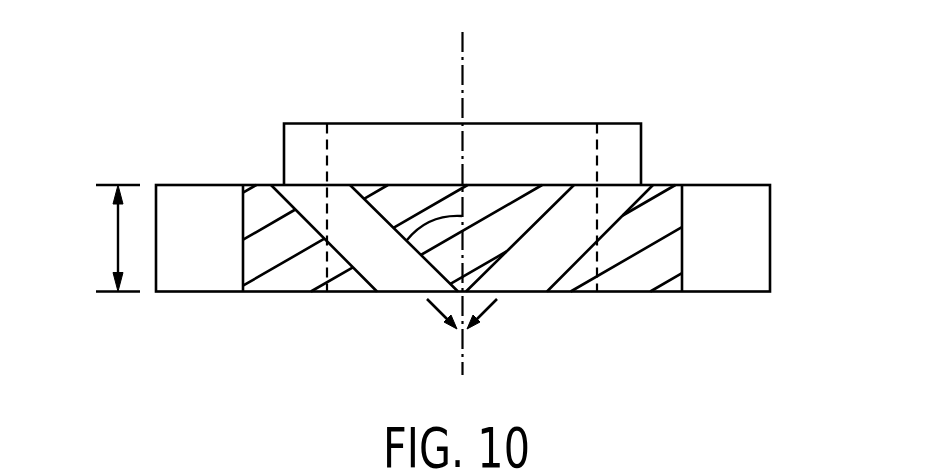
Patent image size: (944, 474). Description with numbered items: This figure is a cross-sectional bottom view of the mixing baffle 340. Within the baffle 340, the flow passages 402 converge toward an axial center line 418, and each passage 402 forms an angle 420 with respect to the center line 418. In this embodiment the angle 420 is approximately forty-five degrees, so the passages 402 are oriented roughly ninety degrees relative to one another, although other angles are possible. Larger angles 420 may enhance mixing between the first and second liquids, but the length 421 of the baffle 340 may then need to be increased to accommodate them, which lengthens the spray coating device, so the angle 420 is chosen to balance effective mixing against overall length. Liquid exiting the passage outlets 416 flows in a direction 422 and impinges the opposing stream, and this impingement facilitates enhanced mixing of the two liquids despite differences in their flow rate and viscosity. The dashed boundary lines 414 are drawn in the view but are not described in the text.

The mixing baffle 340 is at (771, 238).
The flow passages 402 is at (313, 201).
The boundary line 414 is at (337, 185).
The passage outlets 416 is at (397, 292).
The axial center line 418 is at (463, 67).
The angle 420 is at (428, 222).
The length 421 is at (118, 238).
The direction 422 is at (438, 310).